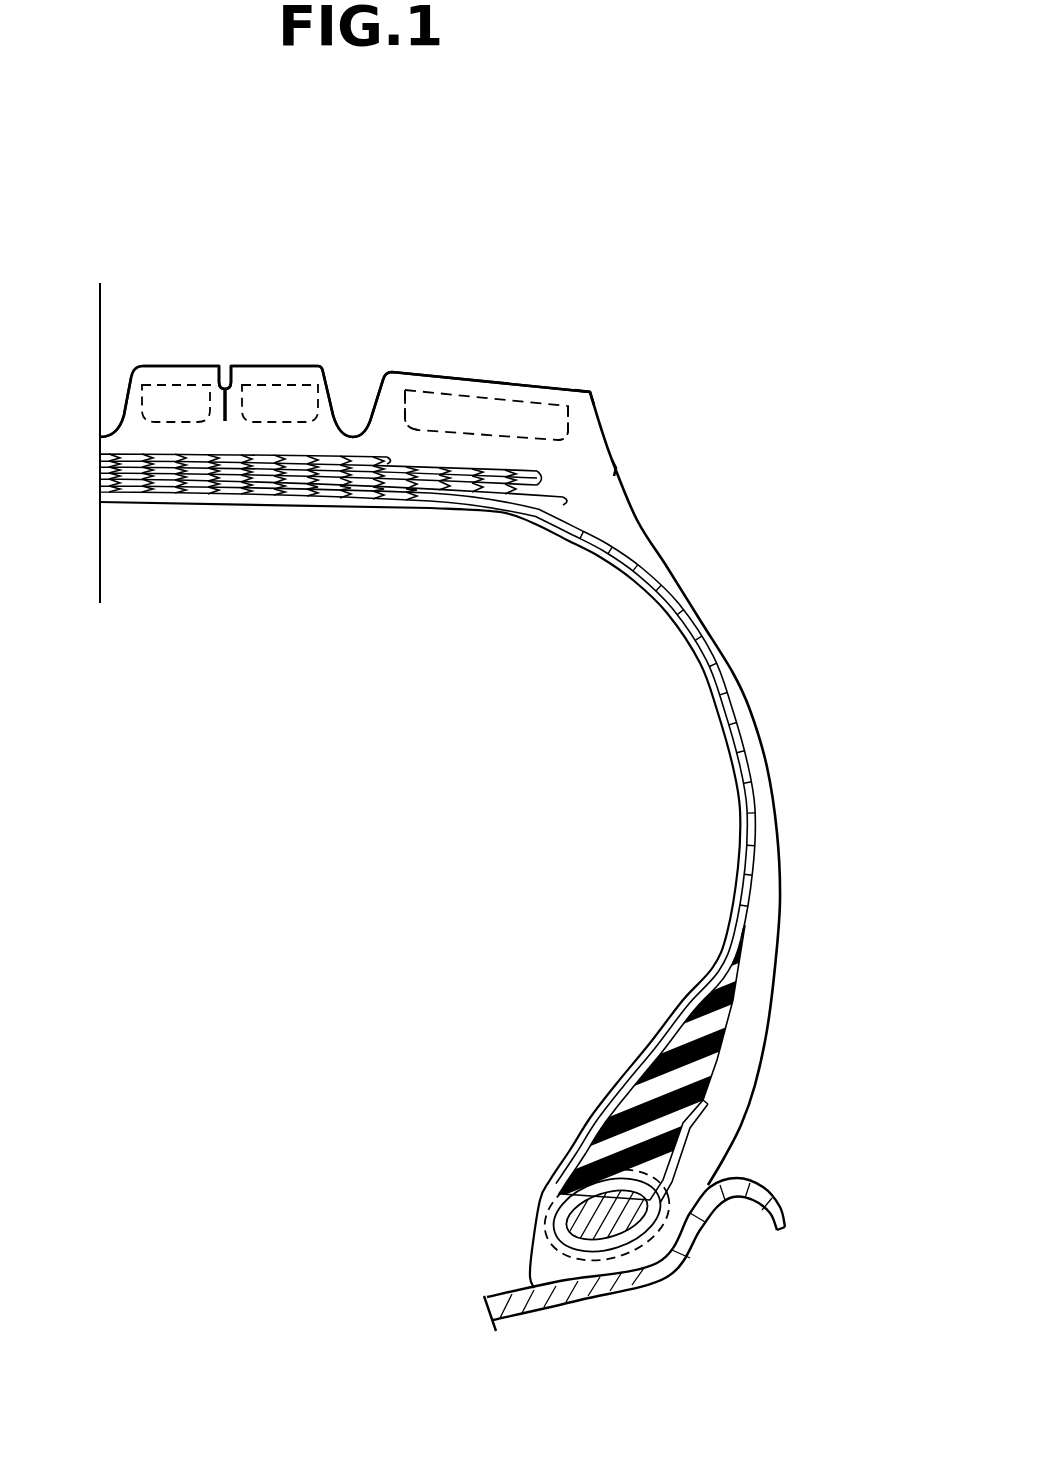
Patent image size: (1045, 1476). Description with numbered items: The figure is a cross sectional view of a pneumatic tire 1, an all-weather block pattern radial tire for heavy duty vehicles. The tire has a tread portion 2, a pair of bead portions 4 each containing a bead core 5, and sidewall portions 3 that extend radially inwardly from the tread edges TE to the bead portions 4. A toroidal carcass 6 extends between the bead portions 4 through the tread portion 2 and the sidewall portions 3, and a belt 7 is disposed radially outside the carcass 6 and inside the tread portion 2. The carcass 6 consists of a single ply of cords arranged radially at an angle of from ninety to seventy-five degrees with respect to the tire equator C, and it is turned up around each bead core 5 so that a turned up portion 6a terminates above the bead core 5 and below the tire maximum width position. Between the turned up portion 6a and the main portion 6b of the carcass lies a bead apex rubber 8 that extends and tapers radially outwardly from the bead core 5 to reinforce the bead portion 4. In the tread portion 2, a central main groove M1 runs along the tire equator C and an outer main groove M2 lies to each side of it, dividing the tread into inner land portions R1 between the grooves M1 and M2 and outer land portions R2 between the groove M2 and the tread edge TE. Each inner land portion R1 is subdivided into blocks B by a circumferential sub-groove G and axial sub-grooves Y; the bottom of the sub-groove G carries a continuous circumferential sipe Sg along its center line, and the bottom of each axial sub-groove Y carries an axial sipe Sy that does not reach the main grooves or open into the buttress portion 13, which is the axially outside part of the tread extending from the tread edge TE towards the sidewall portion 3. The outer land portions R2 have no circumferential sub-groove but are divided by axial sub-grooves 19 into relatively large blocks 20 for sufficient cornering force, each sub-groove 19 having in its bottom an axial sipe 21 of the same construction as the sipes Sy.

The pneumatic tire 1 is at (716, 556).
The tread portion 2 is at (572, 358).
The sidewall portion 3 is at (768, 664).
The bead portion 4 is at (768, 1160).
The bead core 5 is at (580, 1220).
The carcass 6 is at (407, 495).
The turned up portion 6a is at (707, 1117).
The main portion 6b is at (598, 563).
The belt 7 is at (133, 455).
The bead apex rubber 8 is at (655, 1078).
The buttress portion 13 is at (597, 447).
The axial sub-groove 19 is at (553, 360).
The block 20 is at (500, 362).
The axial sipe 21 is at (465, 360).
The tread edge TE is at (680, 368).
The tire equator C is at (100, 590).
The central main groove M1 is at (101, 388).
The outer main groove M2 is at (355, 358).
The inner land portion R1 is at (204, 298).
The outer land portion R2 is at (428, 298).
The circumferential sub-groove G is at (224, 358).
The block B is at (300, 362).
The axial sub-groove Y is at (284, 385).
The axial sipe Sy is at (293, 457).
The circumferential sipe Sg is at (228, 422).